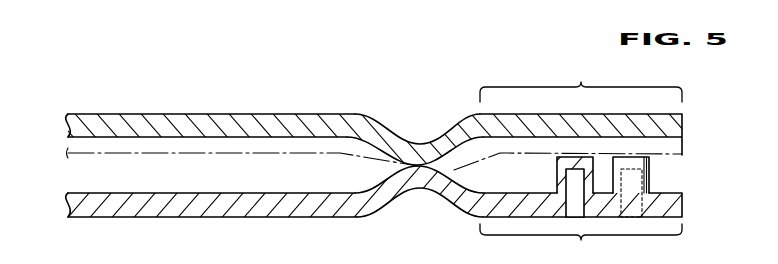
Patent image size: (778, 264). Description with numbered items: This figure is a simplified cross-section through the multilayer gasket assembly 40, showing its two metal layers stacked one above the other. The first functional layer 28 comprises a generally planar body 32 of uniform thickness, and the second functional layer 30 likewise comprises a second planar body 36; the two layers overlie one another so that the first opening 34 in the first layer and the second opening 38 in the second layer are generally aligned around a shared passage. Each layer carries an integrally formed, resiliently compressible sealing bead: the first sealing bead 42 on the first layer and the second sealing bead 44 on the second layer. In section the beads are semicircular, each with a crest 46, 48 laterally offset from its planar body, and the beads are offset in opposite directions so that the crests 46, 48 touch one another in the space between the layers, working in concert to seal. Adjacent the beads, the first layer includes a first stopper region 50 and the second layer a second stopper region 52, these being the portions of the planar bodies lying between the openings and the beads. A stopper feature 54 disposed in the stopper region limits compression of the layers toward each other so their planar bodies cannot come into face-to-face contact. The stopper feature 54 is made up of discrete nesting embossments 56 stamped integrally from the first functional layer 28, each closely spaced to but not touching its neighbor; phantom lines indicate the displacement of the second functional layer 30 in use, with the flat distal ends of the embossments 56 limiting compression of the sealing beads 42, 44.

The first functional layer 28 is at (115, 219).
The second functional layer 30 is at (88, 111).
The planar body 32 is at (227, 217).
The first opening 34 is at (682, 206).
The second planar body 36 is at (192, 114).
The second opening 38 is at (682, 126).
The gasket assembly 40 is at (153, 71).
The first sealing bead 42 is at (372, 205).
The second sealing bead 44 is at (450, 133).
The crest 46 is at (416, 165).
The crest 48 is at (417, 168).
The first stopper region 50 is at (581, 242).
The second stopper region 52 is at (581, 83).
The stopper feature 54 is at (660, 179).
The discrete nesting embossments 56 is at (566, 168).